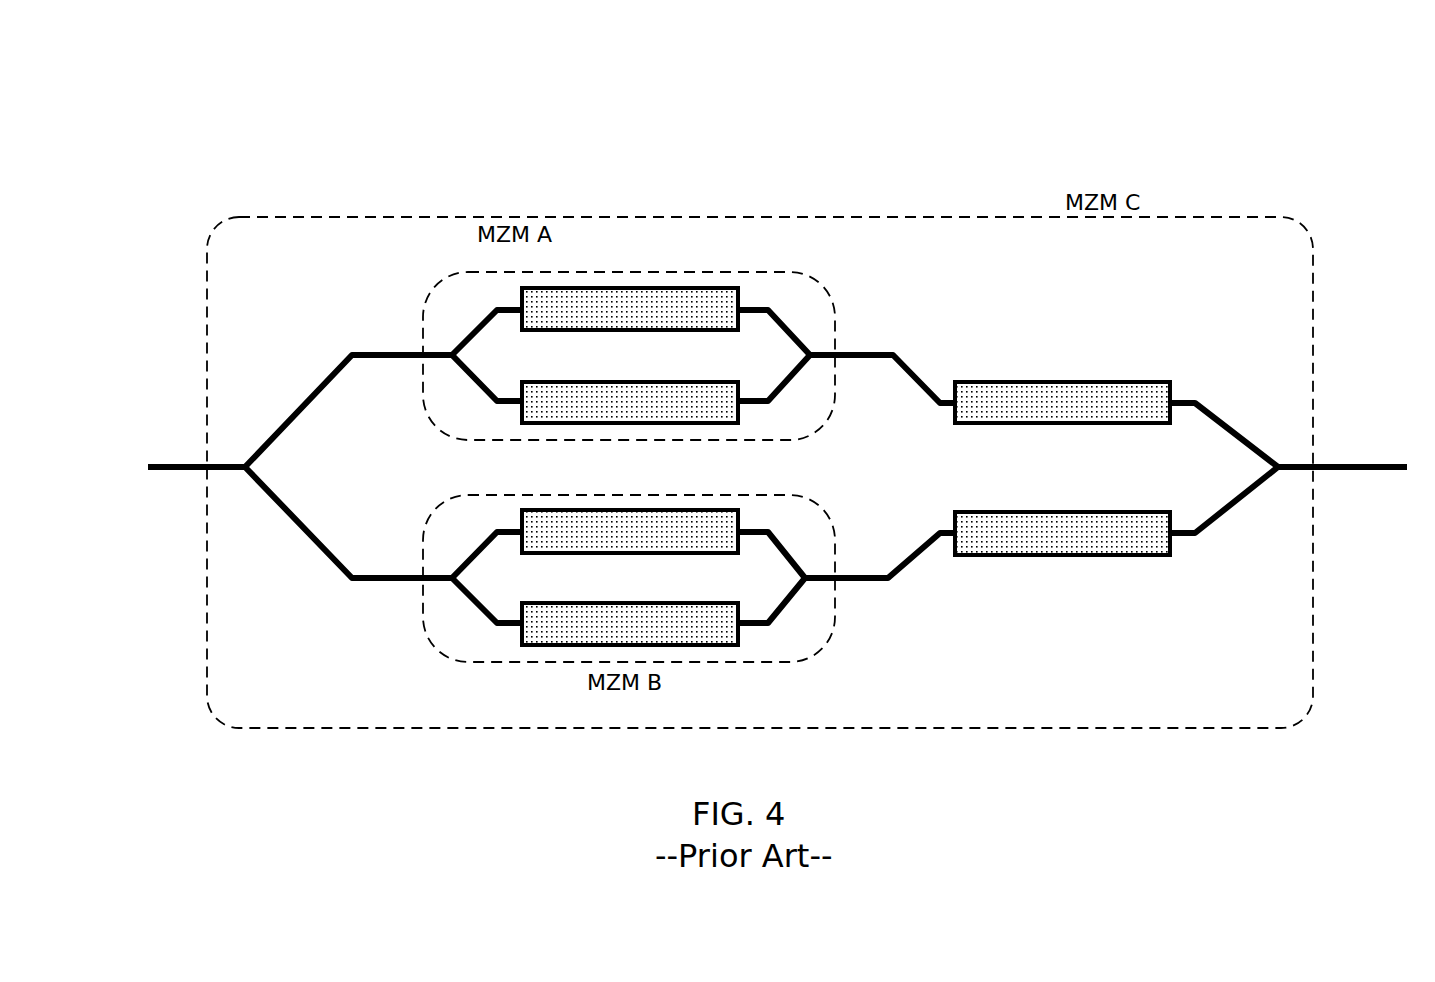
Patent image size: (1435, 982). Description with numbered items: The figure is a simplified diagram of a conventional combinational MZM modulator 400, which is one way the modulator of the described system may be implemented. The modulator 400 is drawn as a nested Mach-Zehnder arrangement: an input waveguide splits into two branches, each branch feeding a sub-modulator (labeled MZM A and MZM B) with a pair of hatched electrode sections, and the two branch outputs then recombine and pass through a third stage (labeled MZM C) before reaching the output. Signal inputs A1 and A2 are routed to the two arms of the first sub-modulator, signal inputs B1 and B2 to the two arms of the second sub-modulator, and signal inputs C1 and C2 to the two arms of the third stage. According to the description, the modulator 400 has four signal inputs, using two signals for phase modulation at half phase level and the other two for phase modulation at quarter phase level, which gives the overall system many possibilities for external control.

The modulator 400 is at (1252, 214).
The first drive signal input of MZM A A1 is at (497, 310).
The second drive signal input of MZM A A2 is at (497, 401).
The first drive signal input of MZM B B1 is at (497, 532).
The second drive signal input of MZM B B2 is at (497, 623).
The first drive signal input of MZM C C1 is at (940, 403).
The second drive signal input of MZM C C2 is at (940, 533).